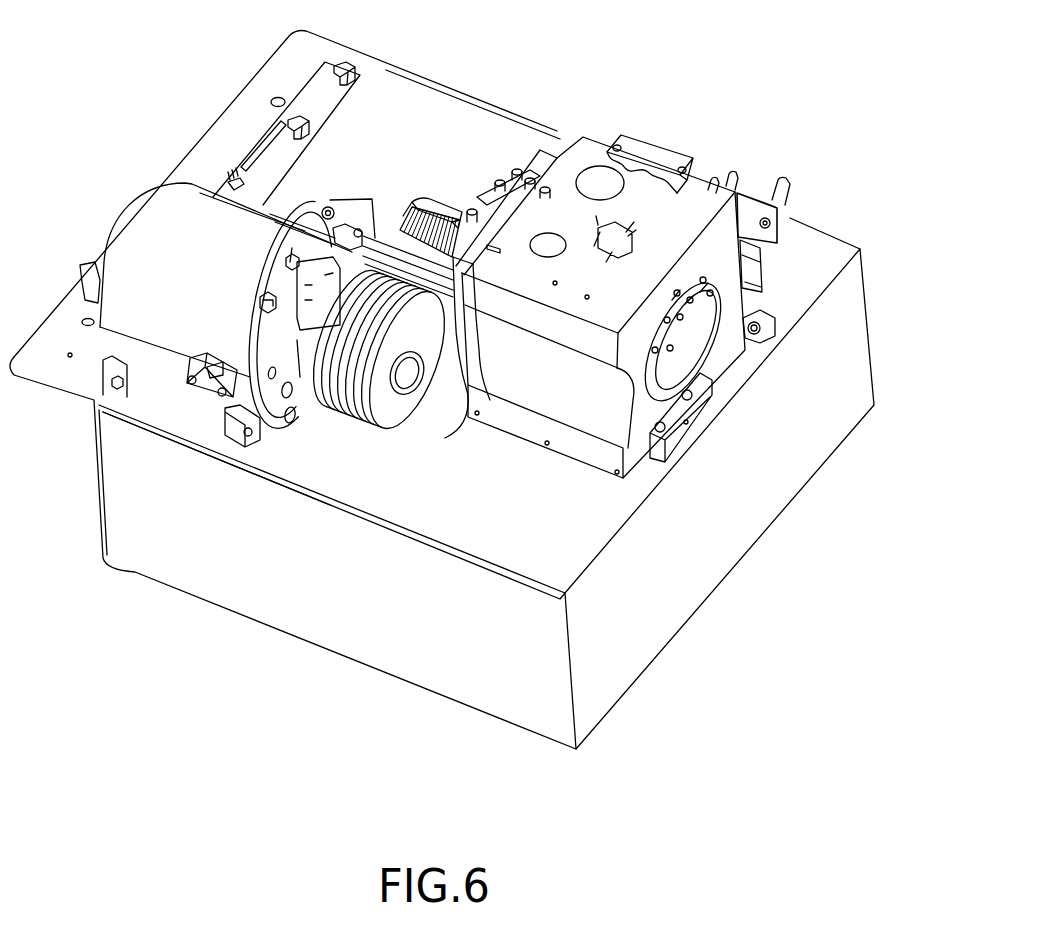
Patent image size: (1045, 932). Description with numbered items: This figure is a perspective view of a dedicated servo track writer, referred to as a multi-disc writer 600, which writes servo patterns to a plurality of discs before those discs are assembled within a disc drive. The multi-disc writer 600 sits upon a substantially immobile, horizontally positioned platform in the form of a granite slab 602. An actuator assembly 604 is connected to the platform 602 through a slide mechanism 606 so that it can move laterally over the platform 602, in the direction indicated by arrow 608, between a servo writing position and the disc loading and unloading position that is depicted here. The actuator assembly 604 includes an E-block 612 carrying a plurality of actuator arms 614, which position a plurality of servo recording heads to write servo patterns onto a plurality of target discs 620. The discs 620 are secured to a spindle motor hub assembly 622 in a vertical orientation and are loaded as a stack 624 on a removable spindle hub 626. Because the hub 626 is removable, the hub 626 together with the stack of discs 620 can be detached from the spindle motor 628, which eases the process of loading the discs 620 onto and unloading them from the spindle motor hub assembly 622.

The multi-disc writer 600 is at (693, 110).
The granite slab 602 is at (383, 653).
The actuator assembly 604 is at (598, 132).
The slide mechanism 606 is at (773, 230).
The arrow 608 is at (764, 349).
The E-block 612 is at (433, 208).
The actuator arms 614 is at (400, 233).
The target discs 620 is at (380, 425).
The spindle motor hub assembly 622 is at (318, 458).
The stack 624 is at (425, 342).
The removable spindle hub 626 is at (413, 383).
The spindle motor 628 is at (148, 222).